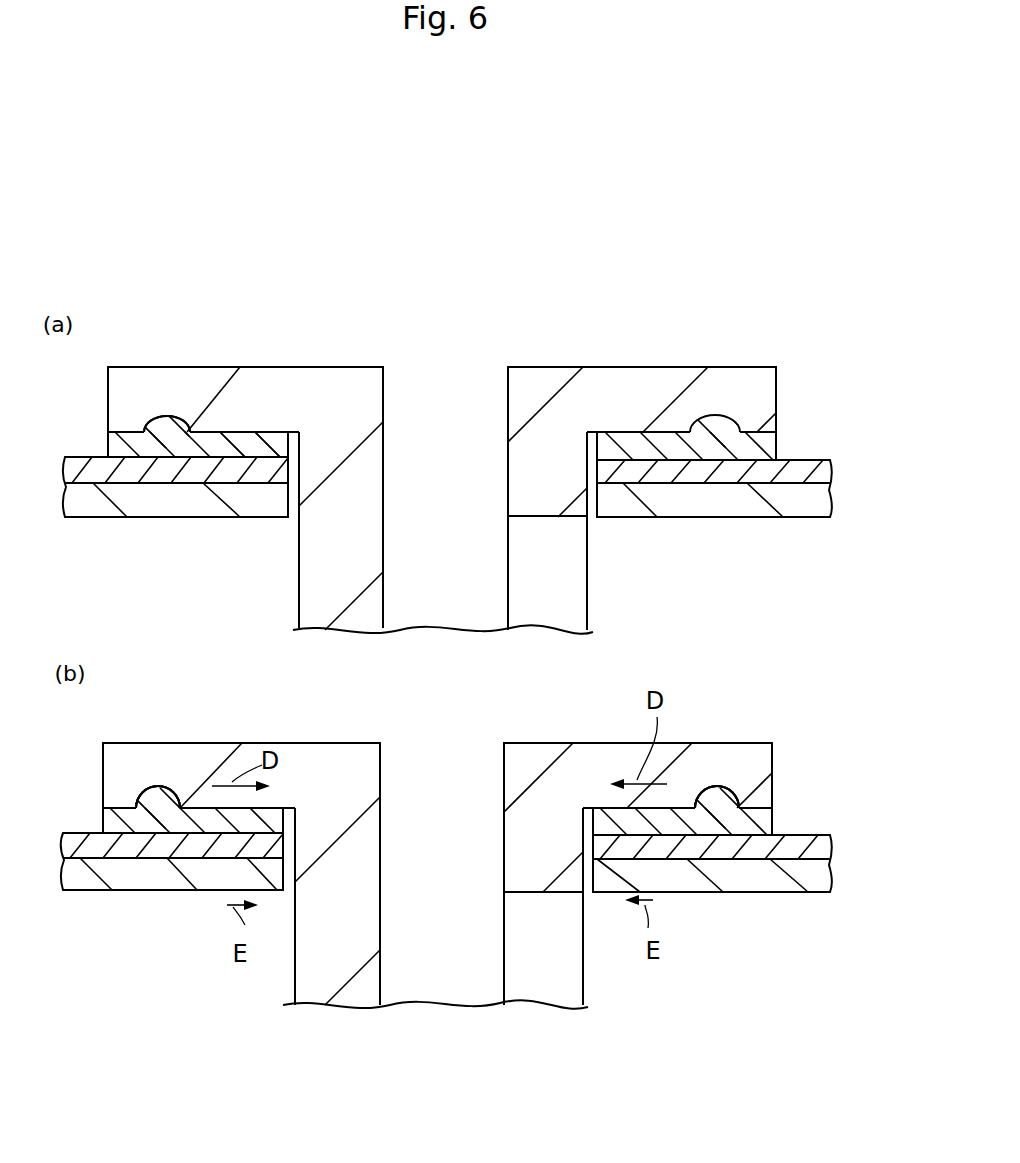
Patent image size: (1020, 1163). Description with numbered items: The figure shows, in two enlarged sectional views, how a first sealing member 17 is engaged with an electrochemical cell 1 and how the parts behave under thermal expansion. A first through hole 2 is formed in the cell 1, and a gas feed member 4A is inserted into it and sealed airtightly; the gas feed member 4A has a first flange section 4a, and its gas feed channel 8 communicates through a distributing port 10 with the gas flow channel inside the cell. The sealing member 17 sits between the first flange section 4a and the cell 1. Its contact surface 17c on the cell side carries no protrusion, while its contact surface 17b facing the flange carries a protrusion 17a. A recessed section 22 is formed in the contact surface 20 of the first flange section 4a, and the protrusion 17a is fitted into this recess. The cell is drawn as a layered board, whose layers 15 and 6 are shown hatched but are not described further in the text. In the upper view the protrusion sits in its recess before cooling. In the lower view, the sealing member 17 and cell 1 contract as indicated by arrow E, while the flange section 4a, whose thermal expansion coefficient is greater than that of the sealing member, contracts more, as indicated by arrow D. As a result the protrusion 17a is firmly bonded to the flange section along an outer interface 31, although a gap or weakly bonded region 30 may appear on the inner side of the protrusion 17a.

The electrochemical cell 1 is at (808, 450).
The first through hole 2 is at (261, 688).
The gas feed member 4A is at (439, 651).
The first flange section 4a is at (200, 378).
The board base layer 6 is at (223, 508).
The gas feed channel 8 is at (383, 387).
The distributing port 10 is at (538, 517).
The wiring layer 15 is at (150, 477).
The first sealing member 17 is at (272, 440).
The protrusion 17a is at (157, 427).
The contact surface opposed to the first flange section 17b is at (622, 432).
The contact surface on the cell side 17c is at (660, 463).
The contact surface of the first flange section 20 is at (247, 440).
The recessed section 22 is at (160, 425).
The gap or weakly bonded region 30 is at (173, 790).
The outer interface 31 is at (140, 800).